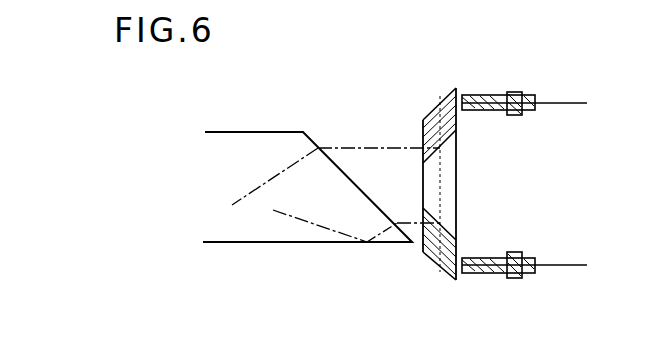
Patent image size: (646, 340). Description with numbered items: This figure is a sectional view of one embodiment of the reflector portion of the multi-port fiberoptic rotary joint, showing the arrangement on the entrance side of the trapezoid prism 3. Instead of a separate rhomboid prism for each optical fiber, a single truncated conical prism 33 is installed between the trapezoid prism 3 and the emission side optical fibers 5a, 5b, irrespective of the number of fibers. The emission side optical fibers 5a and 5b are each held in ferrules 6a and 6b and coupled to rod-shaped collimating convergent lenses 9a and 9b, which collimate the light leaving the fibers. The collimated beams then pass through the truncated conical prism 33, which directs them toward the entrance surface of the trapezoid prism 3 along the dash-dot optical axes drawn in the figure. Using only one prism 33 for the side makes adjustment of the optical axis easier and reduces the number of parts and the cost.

The trapezoid prism 3 is at (240, 140).
The truncated conical prism 33 is at (427, 115).
The rod-shaped collimating convergent lens 9a is at (480, 95).
The rod-shaped collimating convergent lens 9b is at (478, 273).
The ferrule 6a is at (500, 110).
The ferrule 6b is at (502, 258).
The emission side optical fiber 5a is at (562, 102).
The emission side optical fiber 5b is at (573, 268).